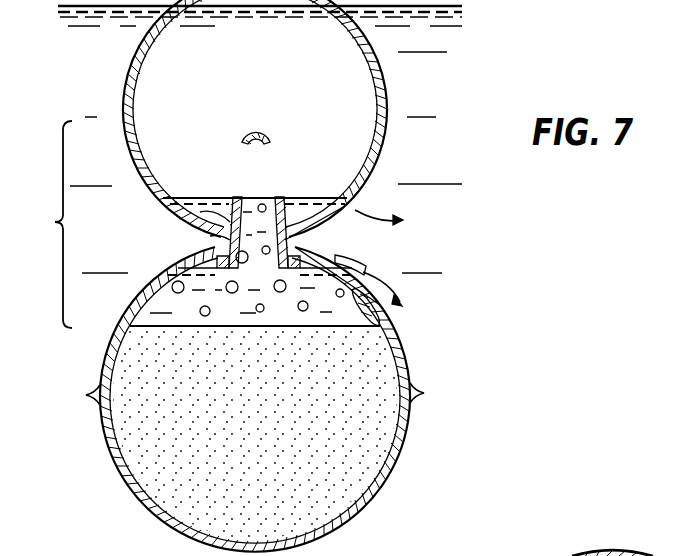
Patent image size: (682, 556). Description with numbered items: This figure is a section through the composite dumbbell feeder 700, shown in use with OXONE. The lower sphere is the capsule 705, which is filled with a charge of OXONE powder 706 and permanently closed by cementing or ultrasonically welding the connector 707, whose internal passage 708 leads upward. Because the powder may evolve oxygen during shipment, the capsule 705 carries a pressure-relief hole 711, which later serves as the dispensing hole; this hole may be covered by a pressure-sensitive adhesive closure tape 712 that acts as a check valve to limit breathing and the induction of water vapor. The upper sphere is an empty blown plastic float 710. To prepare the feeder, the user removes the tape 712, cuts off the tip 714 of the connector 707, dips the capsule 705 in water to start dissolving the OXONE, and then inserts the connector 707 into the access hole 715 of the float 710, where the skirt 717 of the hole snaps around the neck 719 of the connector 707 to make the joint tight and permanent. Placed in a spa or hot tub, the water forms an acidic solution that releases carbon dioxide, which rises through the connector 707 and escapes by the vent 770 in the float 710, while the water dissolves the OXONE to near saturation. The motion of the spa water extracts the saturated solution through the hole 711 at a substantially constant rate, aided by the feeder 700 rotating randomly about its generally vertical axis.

The dumbbell feeder 700 is at (44, 224).
The capsule 705 is at (137, 488).
The ballast material 706 is at (289, 437).
The connector 707 is at (282, 197).
The valve passage 708 is at (252, 205).
The float 710 is at (386, 97).
The pressure-relief hole 711 is at (393, 316).
The pressure-sensitive adhesive closure tape 712 is at (343, 262).
The tip of the connector 714 is at (256, 131).
The access hole 715 is at (214, 214).
The skirt 717 is at (207, 236).
The neck 719 is at (292, 203).
The vent 770 is at (350, 205).